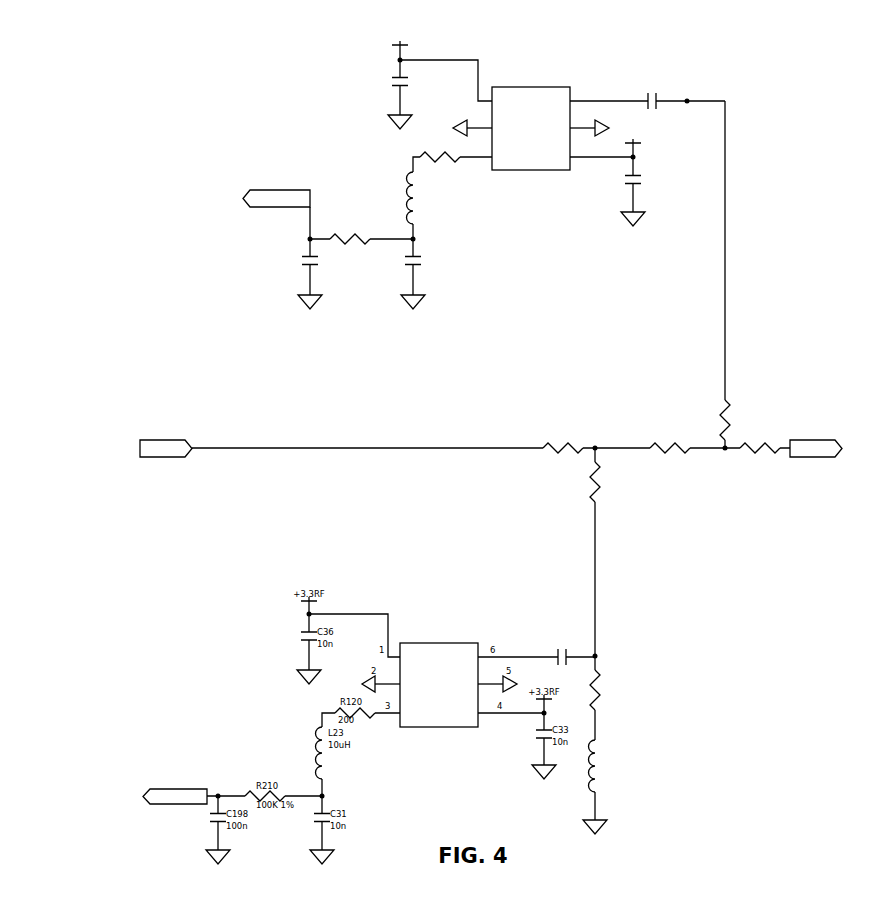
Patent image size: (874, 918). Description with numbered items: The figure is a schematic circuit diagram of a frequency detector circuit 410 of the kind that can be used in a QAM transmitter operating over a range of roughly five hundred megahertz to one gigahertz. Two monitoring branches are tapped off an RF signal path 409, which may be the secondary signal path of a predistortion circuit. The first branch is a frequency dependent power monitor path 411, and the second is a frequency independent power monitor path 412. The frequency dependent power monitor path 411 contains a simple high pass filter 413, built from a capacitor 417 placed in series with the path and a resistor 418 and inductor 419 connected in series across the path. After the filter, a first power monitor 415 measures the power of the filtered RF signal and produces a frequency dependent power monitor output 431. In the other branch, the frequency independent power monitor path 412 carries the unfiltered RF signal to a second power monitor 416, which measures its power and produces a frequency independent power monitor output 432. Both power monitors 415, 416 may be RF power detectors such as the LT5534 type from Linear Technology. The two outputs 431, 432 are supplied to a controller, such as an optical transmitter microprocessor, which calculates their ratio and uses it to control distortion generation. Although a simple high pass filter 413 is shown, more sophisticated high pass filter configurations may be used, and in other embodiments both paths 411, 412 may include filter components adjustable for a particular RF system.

The RF signal path 409 is at (398, 446).
The frequency detector circuit 410 is at (172, 293).
The frequency dependent power monitor path 411 is at (630, 559).
The frequency independent power monitor path 412 is at (756, 272).
The high pass filter 413 is at (675, 661).
The first power monitor 415 is at (458, 728).
The second power monitor 416 is at (549, 172).
The capacitor 417 is at (557, 650).
The resistor 418 is at (600, 703).
The inductor 419 is at (603, 789).
The frequency dependent power monitor output 431 is at (158, 806).
The frequency independent power monitor output 432 is at (284, 191).